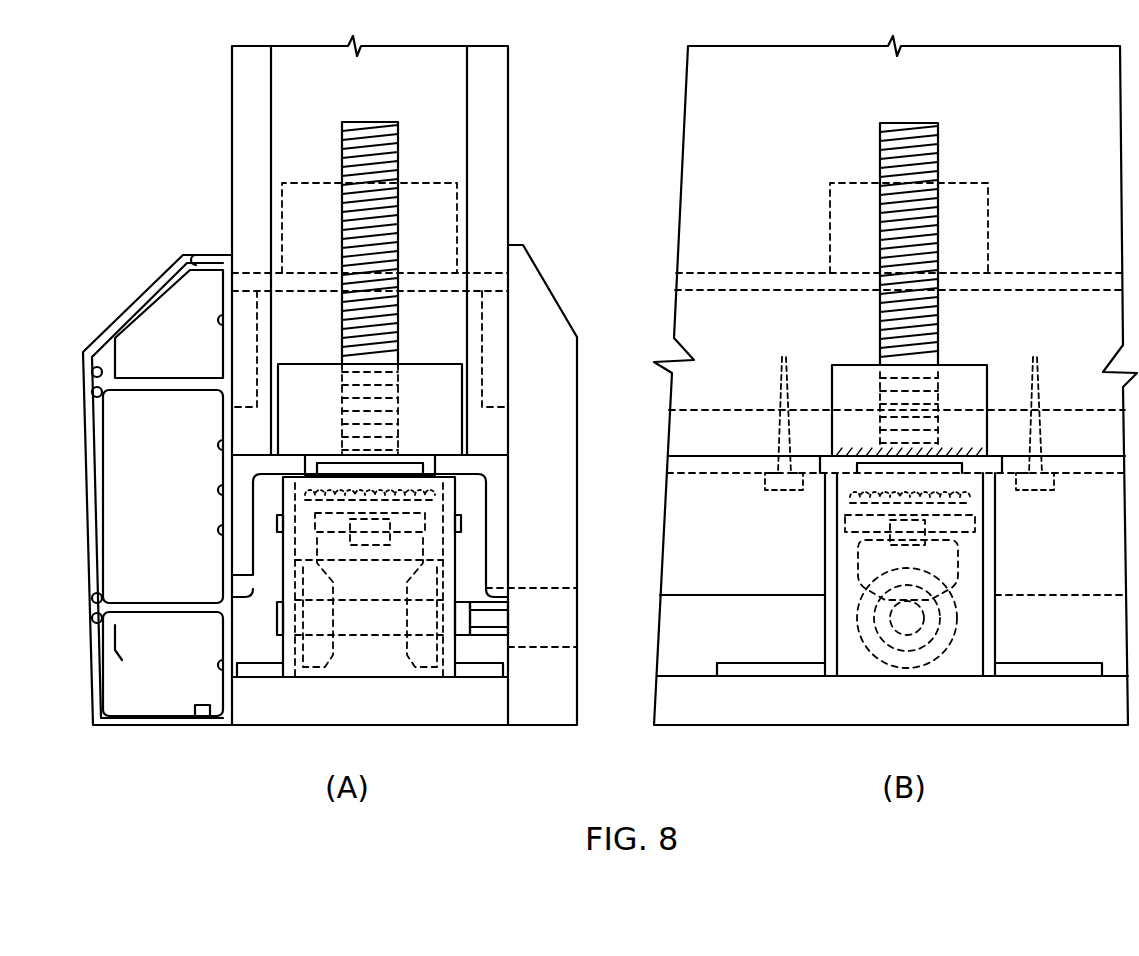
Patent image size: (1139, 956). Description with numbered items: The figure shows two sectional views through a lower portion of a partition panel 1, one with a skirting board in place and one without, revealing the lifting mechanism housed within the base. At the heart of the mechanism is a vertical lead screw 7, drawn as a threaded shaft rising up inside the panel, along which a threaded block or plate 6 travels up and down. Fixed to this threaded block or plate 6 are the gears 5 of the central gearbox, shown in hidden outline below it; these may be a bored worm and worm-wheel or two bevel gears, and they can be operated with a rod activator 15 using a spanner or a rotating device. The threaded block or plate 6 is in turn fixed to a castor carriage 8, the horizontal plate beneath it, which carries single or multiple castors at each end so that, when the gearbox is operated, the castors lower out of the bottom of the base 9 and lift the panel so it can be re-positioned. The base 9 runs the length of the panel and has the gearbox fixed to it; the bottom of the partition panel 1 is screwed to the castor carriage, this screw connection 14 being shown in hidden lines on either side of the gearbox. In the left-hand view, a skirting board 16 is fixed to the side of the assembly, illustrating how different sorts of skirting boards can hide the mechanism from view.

The partition panel 1 is at (686, 95).
The bevel gears 5 is at (438, 584).
The threaded block or plate 6 is at (467, 376).
The vertical lead screw 7 is at (398, 160).
The castor carriage 8 is at (493, 453).
The base 9 is at (488, 727).
The castor carriage screw 14 is at (783, 491).
The rod activator 15 is at (508, 615).
The skirting boards 16 is at (183, 265).